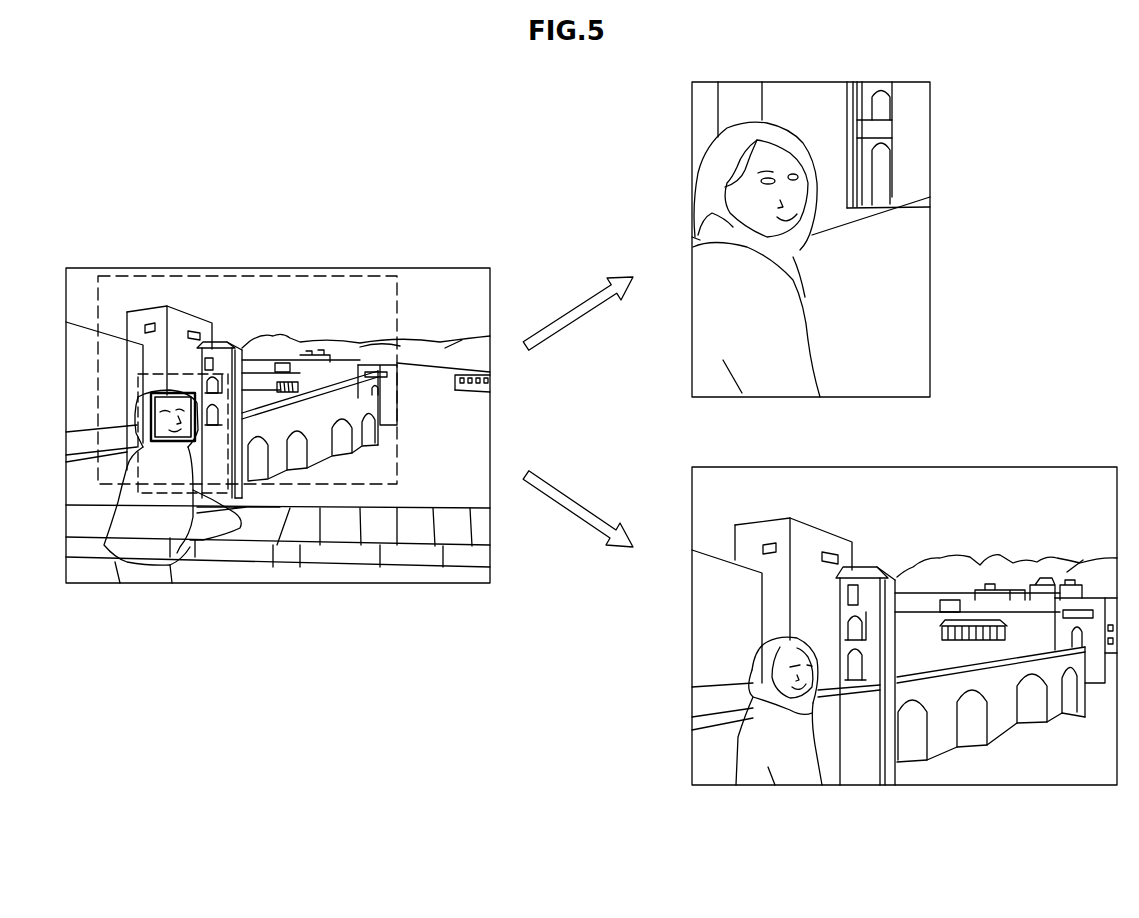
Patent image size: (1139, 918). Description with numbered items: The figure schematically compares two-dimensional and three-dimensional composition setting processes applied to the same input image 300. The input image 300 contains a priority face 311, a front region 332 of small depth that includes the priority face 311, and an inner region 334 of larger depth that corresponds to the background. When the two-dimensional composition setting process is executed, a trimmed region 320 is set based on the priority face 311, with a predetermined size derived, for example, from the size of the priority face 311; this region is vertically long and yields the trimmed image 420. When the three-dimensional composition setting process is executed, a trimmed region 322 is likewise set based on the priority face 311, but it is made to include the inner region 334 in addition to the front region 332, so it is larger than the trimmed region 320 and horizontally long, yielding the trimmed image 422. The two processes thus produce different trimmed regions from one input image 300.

The input image 300 is at (80, 268).
The priority face 311 is at (160, 393).
The trimmed region 320 is at (182, 375).
The trimmed region 322 is at (378, 276).
The front region 332 is at (192, 540).
The inner region 334 is at (341, 436).
The trimmed image 420 is at (735, 82).
The trimmed image 422 is at (735, 467).